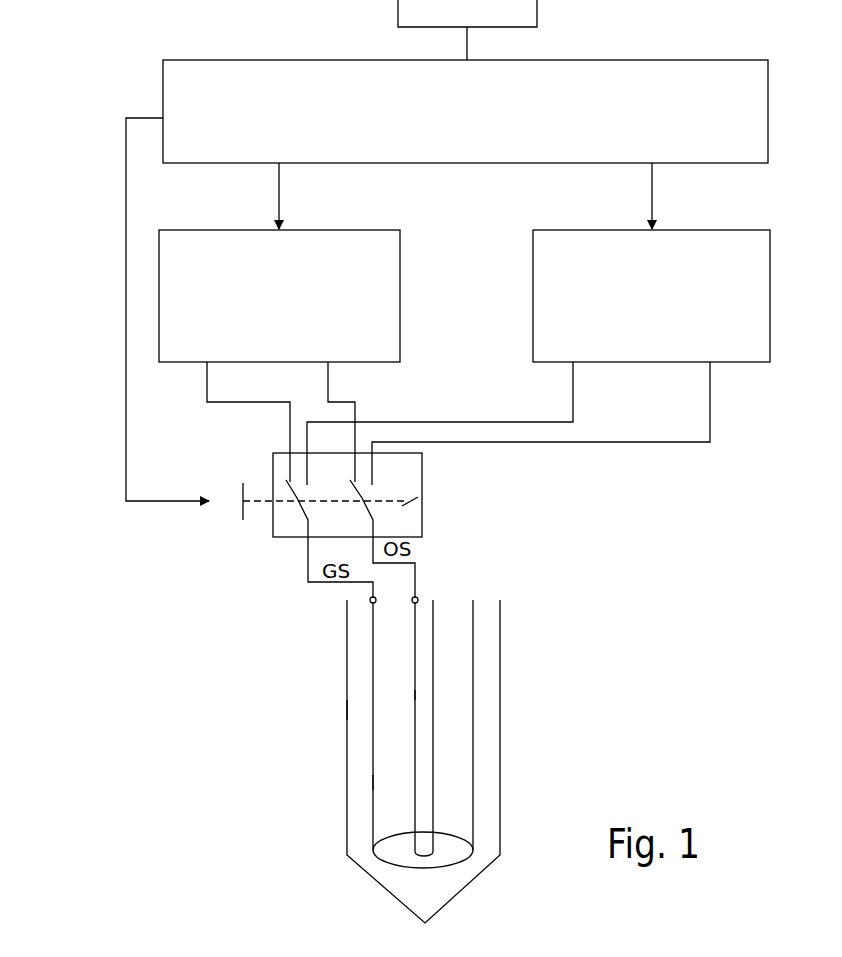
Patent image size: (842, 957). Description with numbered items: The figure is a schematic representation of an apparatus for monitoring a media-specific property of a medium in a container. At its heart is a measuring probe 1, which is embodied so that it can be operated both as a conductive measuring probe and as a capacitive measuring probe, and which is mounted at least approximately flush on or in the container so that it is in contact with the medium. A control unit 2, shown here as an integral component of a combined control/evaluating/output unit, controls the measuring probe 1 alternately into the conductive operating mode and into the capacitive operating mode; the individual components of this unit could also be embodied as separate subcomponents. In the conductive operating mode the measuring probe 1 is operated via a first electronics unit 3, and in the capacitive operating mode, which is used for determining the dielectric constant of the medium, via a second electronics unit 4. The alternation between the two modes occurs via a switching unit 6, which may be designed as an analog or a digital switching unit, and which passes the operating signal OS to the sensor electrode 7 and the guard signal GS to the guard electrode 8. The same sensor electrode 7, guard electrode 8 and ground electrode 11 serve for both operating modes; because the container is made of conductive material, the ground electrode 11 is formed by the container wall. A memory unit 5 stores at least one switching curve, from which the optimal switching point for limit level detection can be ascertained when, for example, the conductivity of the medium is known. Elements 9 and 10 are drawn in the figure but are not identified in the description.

The measuring probe 1 is at (189, 768).
The control unit 2 is at (459, 124).
The first electronics unit 3 is at (271, 309).
The second electronics unit 4 is at (642, 309).
The memory unit 5 is at (467, 13).
The switching unit 6 is at (423, 496).
The sensor electrode 7 is at (437, 627).
The guard electrode 8 is at (478, 627).
The gap 9 is at (397, 688).
The outer wall 10 is at (363, 782).
The ground electrode 11 is at (504, 627).